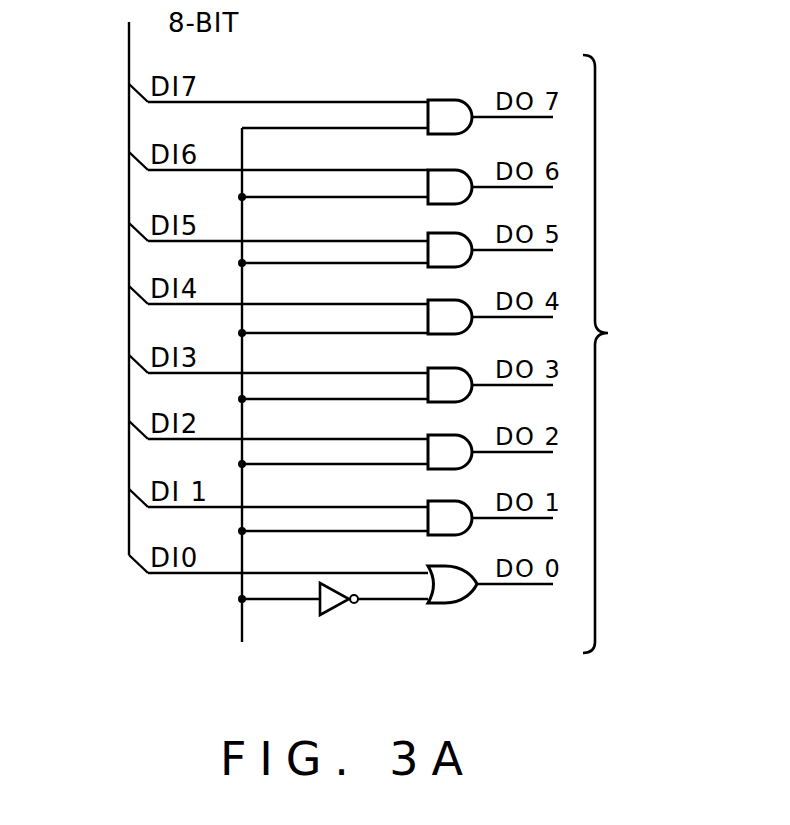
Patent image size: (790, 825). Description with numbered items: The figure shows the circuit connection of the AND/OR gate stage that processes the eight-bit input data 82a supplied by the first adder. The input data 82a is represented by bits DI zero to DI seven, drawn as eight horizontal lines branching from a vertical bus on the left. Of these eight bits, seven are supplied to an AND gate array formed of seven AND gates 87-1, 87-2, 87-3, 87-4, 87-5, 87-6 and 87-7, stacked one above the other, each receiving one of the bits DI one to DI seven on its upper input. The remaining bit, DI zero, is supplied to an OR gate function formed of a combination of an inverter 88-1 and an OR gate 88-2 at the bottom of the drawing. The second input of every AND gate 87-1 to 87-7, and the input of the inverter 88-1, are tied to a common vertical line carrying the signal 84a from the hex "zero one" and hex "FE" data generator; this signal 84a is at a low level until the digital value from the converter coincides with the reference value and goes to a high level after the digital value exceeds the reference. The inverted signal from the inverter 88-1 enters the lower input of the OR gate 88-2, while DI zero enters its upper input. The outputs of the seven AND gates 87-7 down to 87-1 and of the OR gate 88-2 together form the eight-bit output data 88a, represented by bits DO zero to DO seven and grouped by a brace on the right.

The 8-bit input data 82a is at (137, 50).
The signal from hex 01 and hex FE data generator 84a is at (240, 606).
The AND gate 87-7 is at (448, 104).
The AND gate 87-6 is at (435, 172).
The AND gate 87-5 is at (435, 237).
The AND gate 87-4 is at (435, 304).
The AND gate 87-3 is at (435, 372).
The AND gate 87-2 is at (435, 438).
The AND gate 87-1 is at (435, 504).
The inverter 88-1 is at (323, 612).
The OR gate 88-2 is at (453, 597).
The 8-bit output data 88a is at (625, 354).